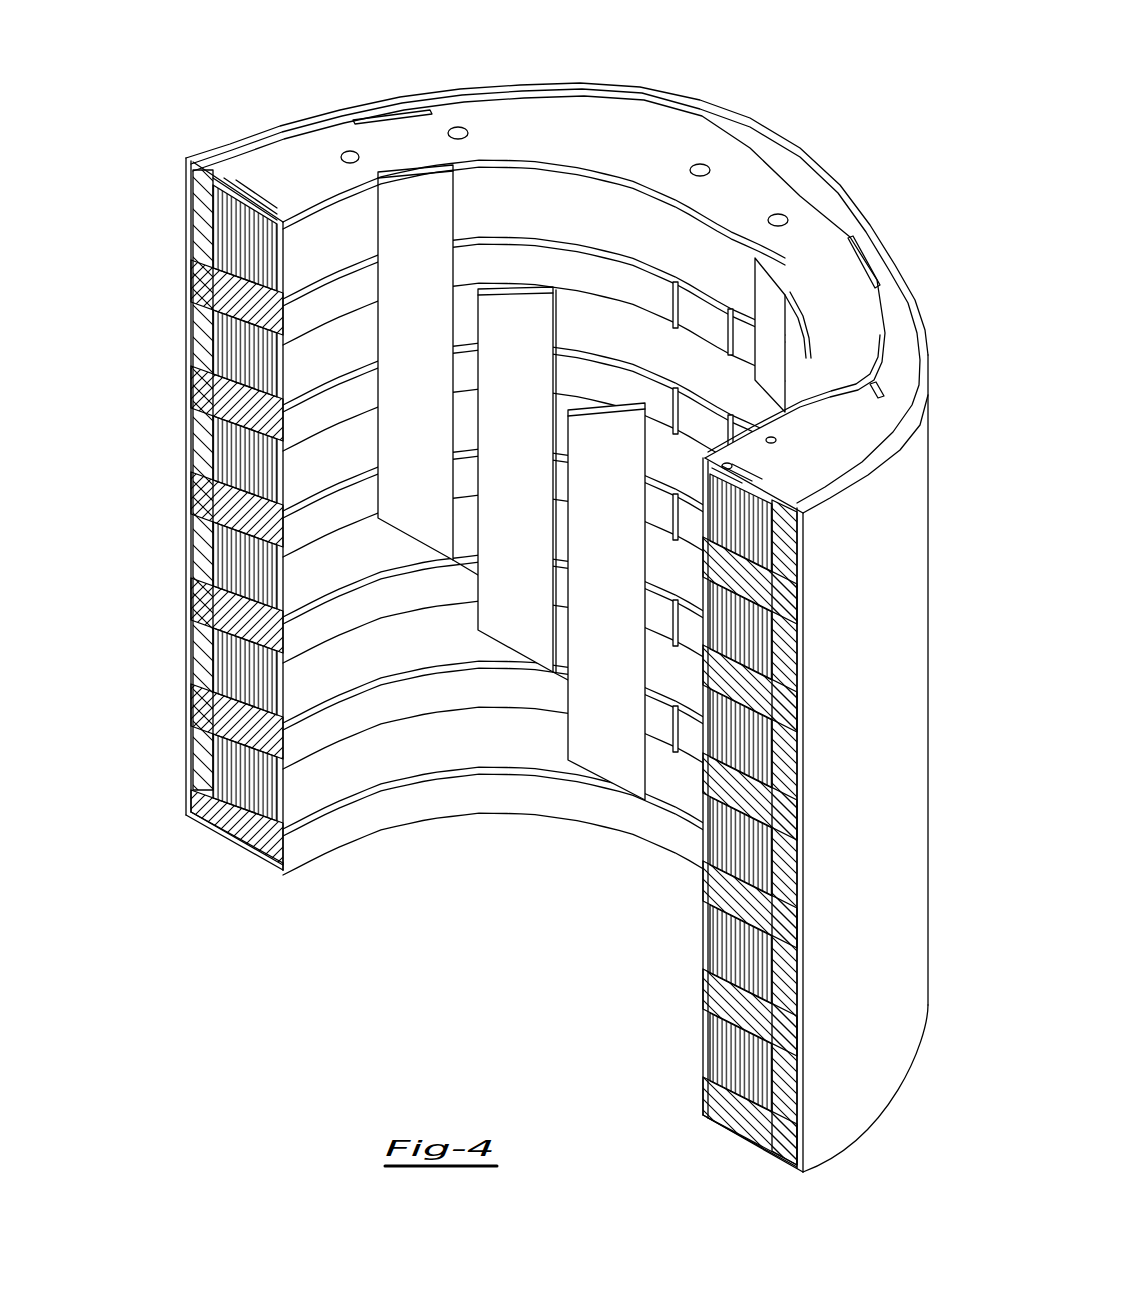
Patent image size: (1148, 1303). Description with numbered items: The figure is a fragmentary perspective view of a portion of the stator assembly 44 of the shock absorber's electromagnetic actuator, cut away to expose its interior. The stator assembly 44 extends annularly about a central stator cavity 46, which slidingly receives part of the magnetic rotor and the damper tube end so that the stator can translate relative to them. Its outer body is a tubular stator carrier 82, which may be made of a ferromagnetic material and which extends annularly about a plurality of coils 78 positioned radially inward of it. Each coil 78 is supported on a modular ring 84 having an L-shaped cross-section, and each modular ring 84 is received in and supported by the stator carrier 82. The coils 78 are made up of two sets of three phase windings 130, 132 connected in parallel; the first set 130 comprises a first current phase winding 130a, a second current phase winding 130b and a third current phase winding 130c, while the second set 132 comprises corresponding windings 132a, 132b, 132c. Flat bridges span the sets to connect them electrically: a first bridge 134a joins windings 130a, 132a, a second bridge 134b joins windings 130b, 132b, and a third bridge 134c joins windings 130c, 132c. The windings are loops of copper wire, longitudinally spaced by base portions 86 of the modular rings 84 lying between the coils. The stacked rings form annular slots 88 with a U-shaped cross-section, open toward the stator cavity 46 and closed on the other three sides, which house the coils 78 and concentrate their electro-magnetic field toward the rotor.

The stator assembly 44 is at (782, 86).
The stator cavity 46 is at (558, 850).
The plurality of coils 78 is at (513, 601).
The stator carrier 82 is at (905, 602).
The modular ring 84 is at (783, 815).
The base portions 86 is at (722, 977).
The annular slots 88 is at (380, 652).
The set of three phase windings 130 is at (444, 326).
The first current phase winding 130a is at (327, 232).
The second current phase winding 130b is at (345, 335).
The third current phase winding 130c is at (365, 442).
The set of three phase windings 132 is at (444, 674).
The first current phase winding 132a is at (375, 522).
The second current phase winding 132b is at (315, 665).
The third current phase winding 132c is at (310, 783).
The first bridge 134a is at (440, 183).
The second bridge 134b is at (527, 320).
The third bridge 134c is at (612, 438).